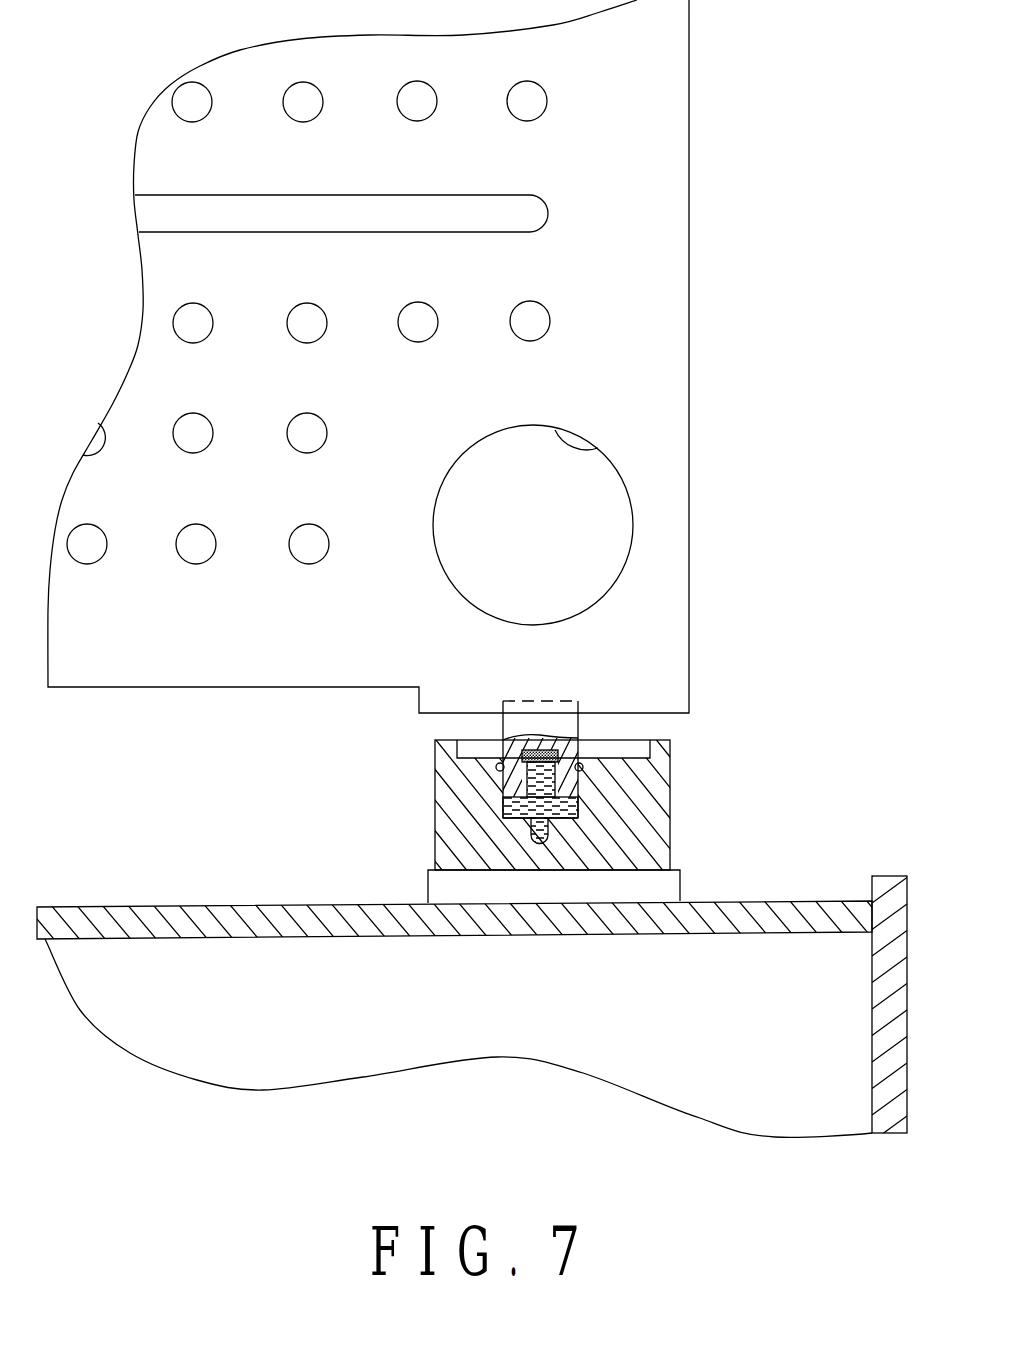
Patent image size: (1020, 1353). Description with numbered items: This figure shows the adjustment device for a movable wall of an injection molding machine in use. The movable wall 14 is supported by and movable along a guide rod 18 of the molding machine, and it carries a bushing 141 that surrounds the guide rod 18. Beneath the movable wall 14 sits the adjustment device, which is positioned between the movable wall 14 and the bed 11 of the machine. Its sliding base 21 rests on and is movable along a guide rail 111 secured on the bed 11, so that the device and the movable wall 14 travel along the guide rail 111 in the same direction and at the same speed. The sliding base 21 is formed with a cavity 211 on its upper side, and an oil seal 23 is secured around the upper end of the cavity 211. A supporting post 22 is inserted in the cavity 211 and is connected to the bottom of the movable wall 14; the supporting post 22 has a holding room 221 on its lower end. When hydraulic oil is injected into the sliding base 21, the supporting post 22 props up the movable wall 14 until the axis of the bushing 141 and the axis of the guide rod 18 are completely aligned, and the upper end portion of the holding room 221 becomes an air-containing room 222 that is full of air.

The movable wall 14 is at (660, 208).
The bushing 141 is at (598, 448).
The guide rod 18 is at (587, 507).
The supporting post 22 is at (568, 725).
The air-containing room 222 is at (520, 756).
The holding room 221 is at (547, 813).
The oil seal 23 is at (580, 767).
The sliding base 21 is at (435, 837).
The cavity 211 is at (549, 805).
The guide rail 111 is at (445, 872).
The bed 11 is at (147, 918).